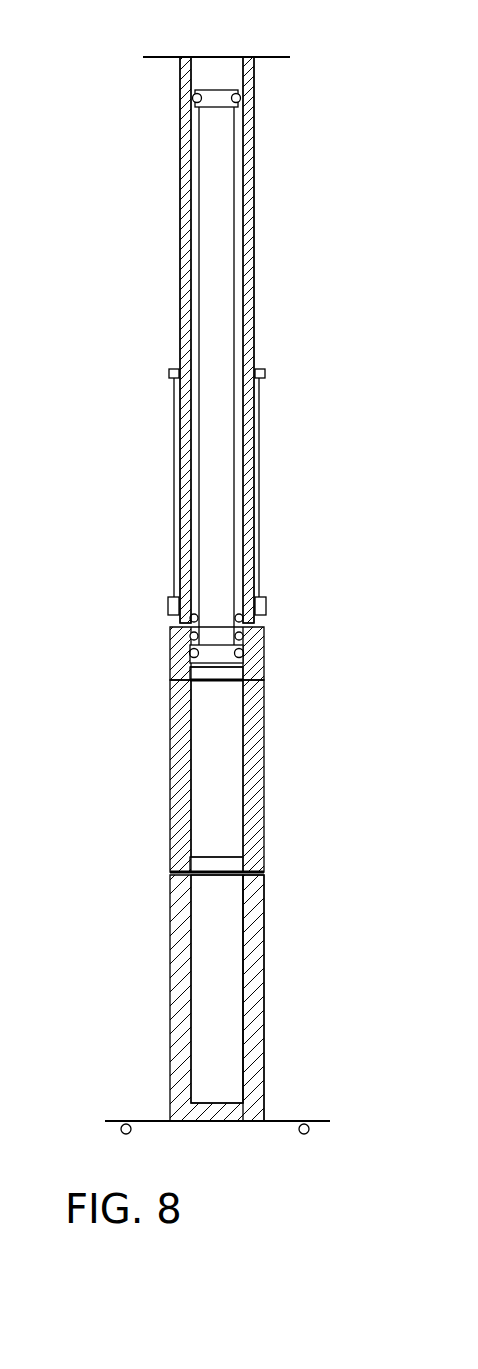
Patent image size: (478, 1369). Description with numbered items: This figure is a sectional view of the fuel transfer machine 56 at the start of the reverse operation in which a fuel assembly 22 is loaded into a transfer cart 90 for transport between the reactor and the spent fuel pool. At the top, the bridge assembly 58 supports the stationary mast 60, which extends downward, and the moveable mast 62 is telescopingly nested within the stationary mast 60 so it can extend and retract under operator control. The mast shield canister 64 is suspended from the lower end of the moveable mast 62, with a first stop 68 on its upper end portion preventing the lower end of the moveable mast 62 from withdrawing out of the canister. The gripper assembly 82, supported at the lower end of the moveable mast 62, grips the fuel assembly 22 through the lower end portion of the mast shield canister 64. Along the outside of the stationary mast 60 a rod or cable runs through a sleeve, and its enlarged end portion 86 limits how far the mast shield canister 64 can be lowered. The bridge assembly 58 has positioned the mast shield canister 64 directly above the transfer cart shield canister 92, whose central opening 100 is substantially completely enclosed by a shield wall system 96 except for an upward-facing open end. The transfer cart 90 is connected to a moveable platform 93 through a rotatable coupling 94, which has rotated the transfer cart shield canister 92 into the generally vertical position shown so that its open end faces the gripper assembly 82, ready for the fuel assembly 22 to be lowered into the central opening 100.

The bridge assembly 58 is at (277, 55).
The fuel transfer machine 56 is at (176, 228).
The stationary mast 60 is at (255, 159).
The moveable mast 62 is at (224, 258).
The end portion of the rod or cable 86 is at (262, 372).
The first stop 68 is at (248, 656).
The gripper assembly 82 is at (216, 670).
The fuel assembly 22 is at (230, 783).
The mast shield canister 64 is at (263, 832).
The shield wall system 96 is at (258, 952).
The transfer cart shield canister 92 is at (270, 1013).
The central opening 100 is at (203, 987).
The rotatable coupling 94 is at (167, 1072).
The moveable platform 93 is at (280, 1121).
The transfer cart 90 is at (161, 1123).